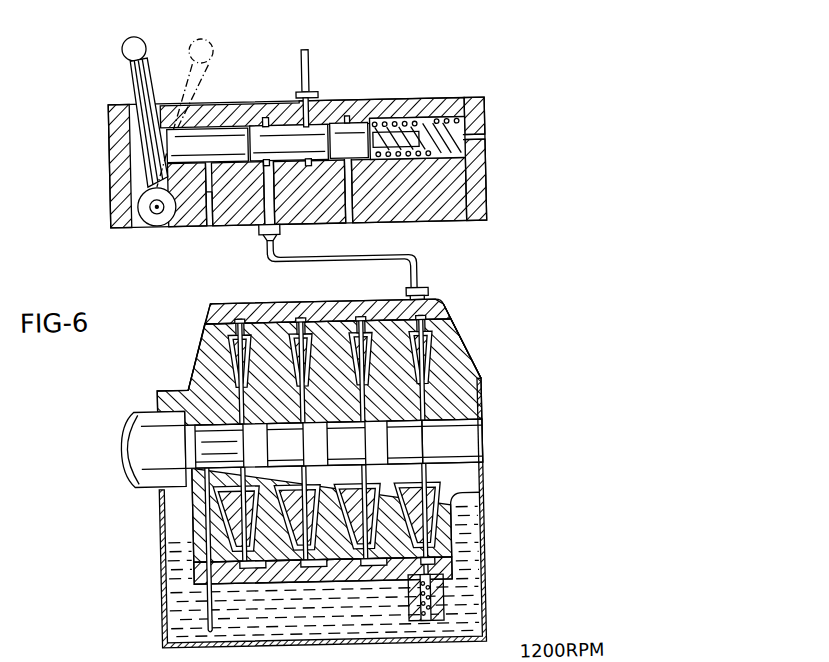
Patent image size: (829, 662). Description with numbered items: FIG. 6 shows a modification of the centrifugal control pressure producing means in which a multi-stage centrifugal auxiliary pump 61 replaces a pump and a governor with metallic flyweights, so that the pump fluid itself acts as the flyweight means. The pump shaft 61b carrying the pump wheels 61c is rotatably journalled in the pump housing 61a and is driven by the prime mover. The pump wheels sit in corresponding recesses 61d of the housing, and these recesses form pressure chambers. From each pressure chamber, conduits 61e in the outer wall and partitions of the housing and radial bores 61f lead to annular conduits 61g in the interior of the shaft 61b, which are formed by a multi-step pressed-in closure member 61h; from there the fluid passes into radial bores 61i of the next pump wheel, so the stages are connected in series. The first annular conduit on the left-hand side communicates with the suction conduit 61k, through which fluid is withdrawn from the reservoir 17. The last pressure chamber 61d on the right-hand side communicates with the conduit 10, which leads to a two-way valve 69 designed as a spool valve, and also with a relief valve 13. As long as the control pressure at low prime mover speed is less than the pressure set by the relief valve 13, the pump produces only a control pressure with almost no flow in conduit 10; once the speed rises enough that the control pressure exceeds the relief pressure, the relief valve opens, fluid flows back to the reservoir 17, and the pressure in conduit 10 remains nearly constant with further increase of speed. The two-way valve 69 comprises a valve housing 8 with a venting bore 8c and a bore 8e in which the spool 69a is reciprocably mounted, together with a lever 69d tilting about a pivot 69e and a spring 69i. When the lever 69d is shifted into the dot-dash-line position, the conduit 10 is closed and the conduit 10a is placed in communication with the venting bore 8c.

The valve housing 8 is at (490, 181).
The venting bore 8c is at (353, 225).
The bore 8e is at (263, 164).
The conduit 10 is at (418, 272).
The conduit 10a is at (318, 63).
The relief valve 13 is at (423, 624).
The reservoir 17 is at (160, 587).
The multi-stage centrifugal auxiliary pump 61 is at (463, 349).
The pump housing 61a is at (443, 326).
The pump shaft 61b is at (136, 483).
The pump wheels 61c is at (231, 377).
The recesses 61d is at (313, 320).
The conduits 61e is at (258, 318).
The radial bores 61f is at (249, 445).
The annular conduits 61g is at (306, 462).
The multi-step pressed-in closure member 61h is at (474, 450).
The radial bores 61i is at (139, 383).
The suction conduit 61k is at (205, 519).
The two-way valve 69 is at (497, 136).
The spool 69a is at (225, 126).
The lever 69d is at (143, 76).
The tilting pivot 69e is at (158, 214).
The spring 69i is at (458, 99).